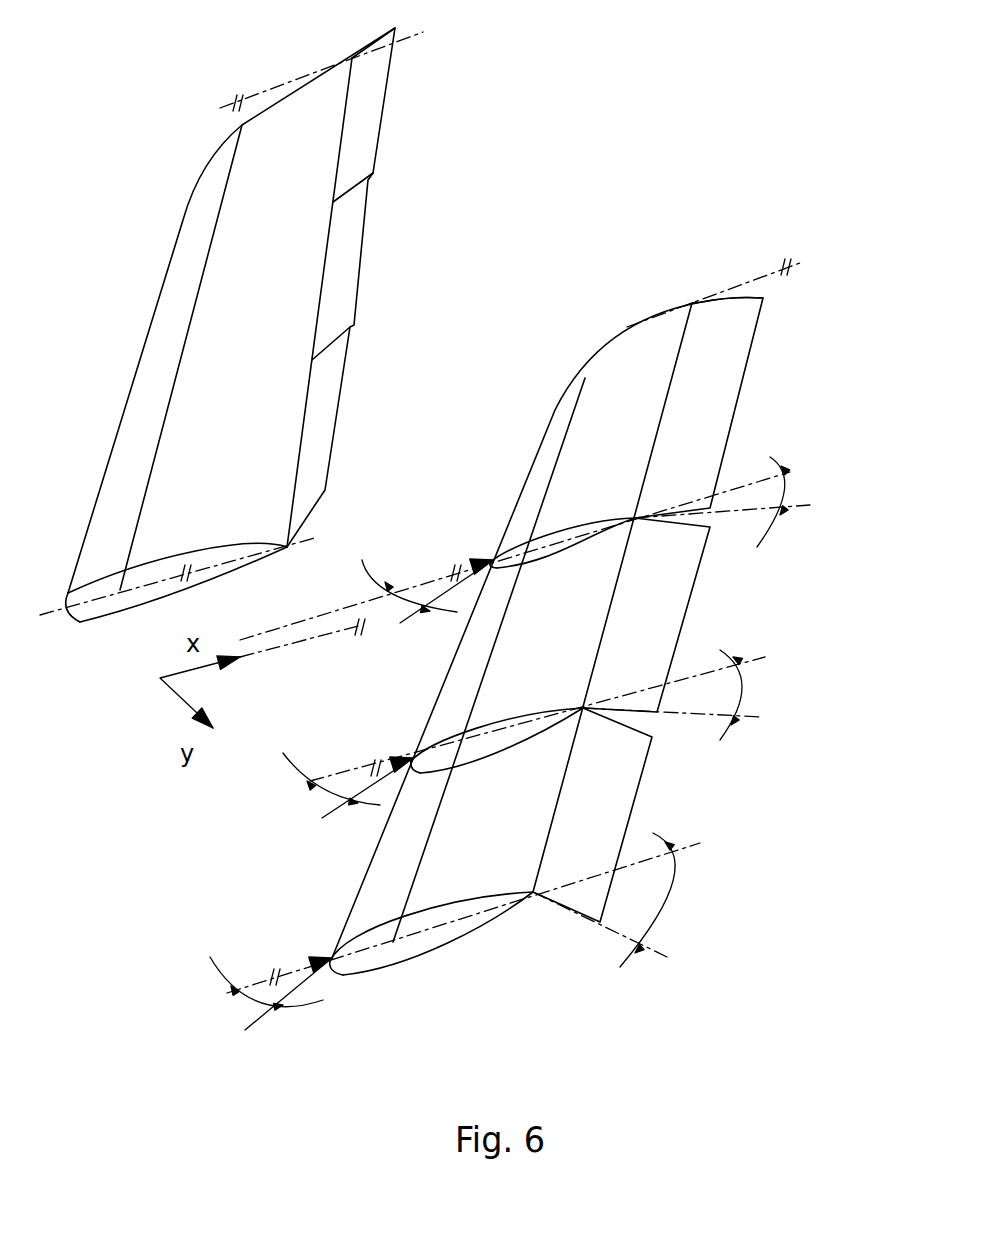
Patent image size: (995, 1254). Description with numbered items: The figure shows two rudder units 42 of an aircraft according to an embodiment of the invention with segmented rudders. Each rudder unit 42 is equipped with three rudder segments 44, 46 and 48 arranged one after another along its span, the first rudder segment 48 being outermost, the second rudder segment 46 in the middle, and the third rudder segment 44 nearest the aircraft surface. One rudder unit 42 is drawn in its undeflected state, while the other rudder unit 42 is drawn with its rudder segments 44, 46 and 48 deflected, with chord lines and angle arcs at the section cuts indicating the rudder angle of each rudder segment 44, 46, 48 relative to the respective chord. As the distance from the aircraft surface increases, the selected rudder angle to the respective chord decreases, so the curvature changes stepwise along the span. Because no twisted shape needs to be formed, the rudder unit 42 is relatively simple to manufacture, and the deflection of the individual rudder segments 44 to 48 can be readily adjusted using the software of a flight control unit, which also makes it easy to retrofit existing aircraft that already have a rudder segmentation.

The rudder unit 42 is at (307, 110).
The rudder segment 44 is at (320, 428).
The rudder segment 46 is at (342, 257).
The rudder segment 48 is at (365, 120).